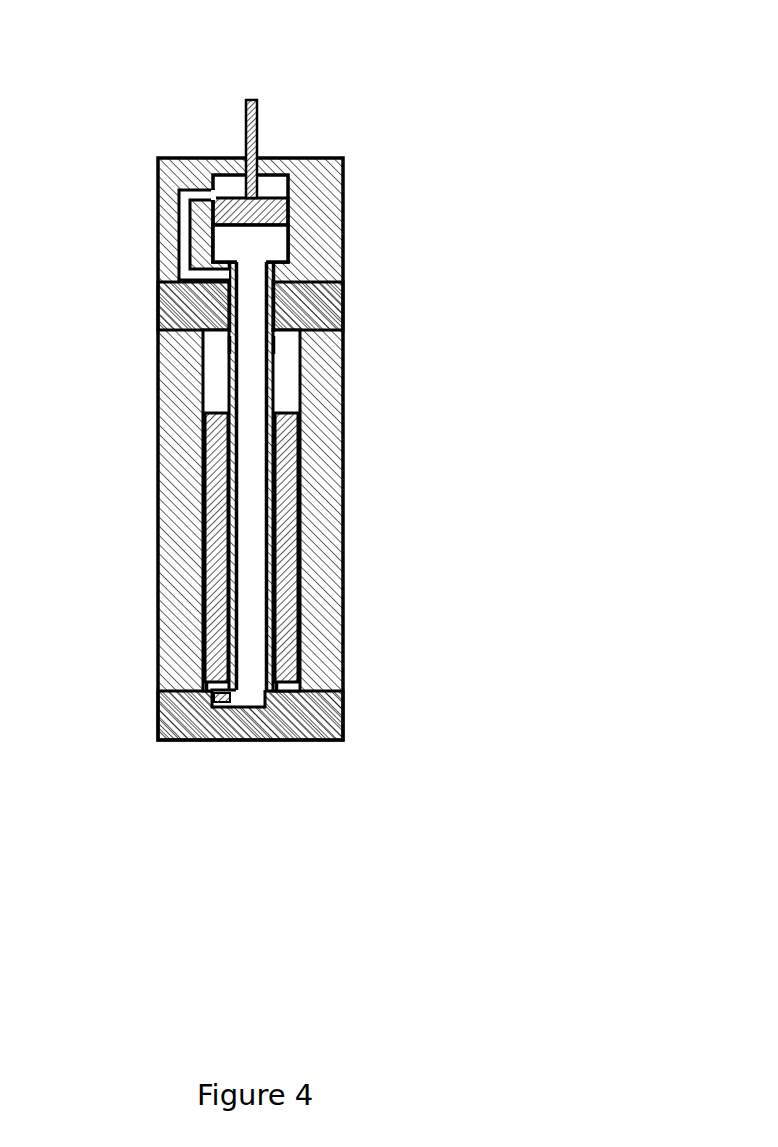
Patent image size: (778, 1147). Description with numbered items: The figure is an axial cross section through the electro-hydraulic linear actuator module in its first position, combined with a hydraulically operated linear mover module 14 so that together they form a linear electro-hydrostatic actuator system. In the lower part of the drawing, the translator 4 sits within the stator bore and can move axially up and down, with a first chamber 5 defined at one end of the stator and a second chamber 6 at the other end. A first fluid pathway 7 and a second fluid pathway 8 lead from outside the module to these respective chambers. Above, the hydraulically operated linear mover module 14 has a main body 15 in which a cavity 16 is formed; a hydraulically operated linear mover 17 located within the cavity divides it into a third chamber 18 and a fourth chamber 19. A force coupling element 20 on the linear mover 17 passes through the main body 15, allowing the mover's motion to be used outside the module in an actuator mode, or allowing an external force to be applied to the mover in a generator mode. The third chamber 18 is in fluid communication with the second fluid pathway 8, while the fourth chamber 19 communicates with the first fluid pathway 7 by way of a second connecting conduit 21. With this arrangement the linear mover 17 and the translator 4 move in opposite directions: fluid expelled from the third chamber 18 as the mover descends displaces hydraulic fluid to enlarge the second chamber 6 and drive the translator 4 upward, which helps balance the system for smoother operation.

The translator 4 is at (283, 505).
The first chamber 5 is at (283, 355).
The second chamber 6 is at (288, 687).
The first fluid pathway 7 is at (272, 378).
The second fluid pathway 8 is at (250, 390).
The hydraulically operated linear mover module 14 is at (127, 159).
The main body 15 is at (185, 168).
The cavity 16 is at (460, 158).
The hydraulically operated linear mover 17 is at (240, 215).
The third chamber 18 is at (267, 242).
The fourth chamber 19 is at (275, 185).
The force coupling element 20 is at (255, 100).
The second connecting conduit 21 is at (180, 271).